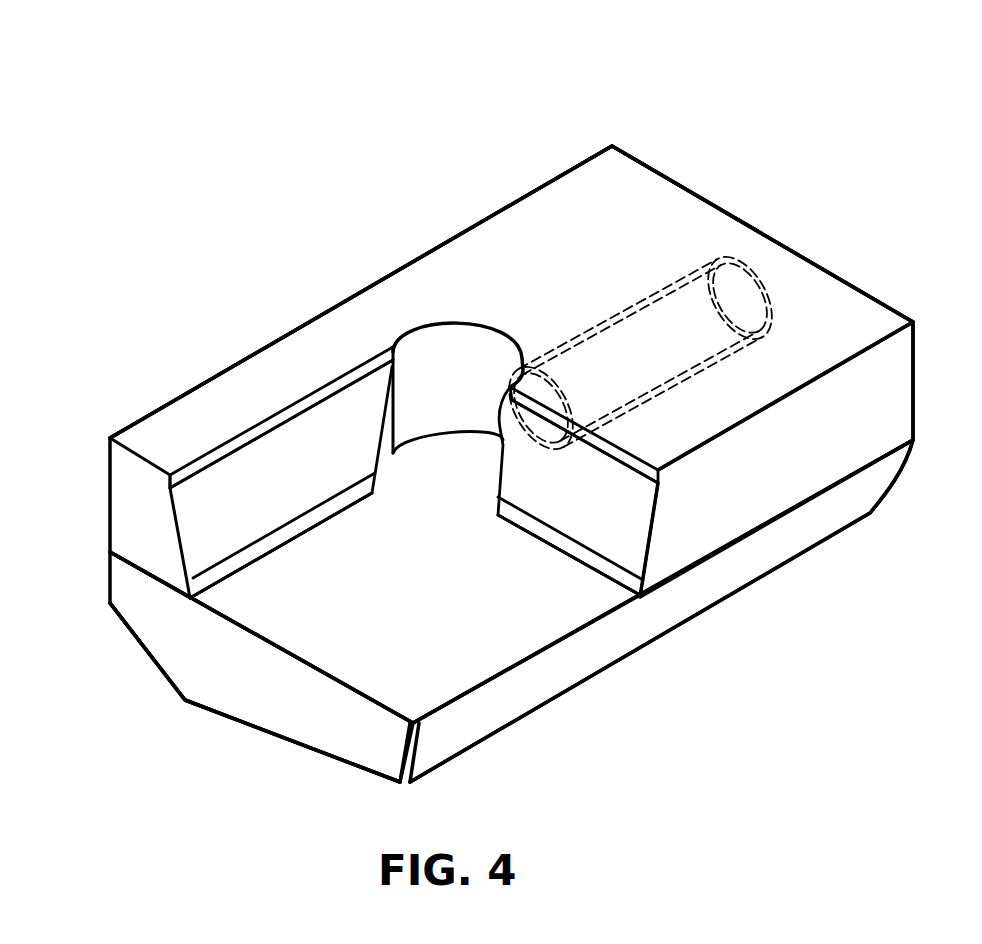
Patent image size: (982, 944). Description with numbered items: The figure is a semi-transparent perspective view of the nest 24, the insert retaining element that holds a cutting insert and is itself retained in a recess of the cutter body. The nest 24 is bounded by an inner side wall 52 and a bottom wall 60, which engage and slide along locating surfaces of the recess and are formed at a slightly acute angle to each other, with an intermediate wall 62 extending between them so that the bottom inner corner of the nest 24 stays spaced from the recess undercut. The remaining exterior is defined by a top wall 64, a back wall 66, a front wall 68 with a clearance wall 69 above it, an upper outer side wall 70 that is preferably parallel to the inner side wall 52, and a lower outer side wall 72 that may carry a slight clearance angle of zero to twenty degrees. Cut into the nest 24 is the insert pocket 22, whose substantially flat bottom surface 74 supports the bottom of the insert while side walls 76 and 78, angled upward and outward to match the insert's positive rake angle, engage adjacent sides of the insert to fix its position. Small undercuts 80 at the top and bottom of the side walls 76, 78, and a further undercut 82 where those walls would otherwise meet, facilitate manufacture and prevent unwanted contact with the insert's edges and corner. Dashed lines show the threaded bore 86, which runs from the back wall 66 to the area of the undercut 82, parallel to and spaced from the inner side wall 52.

The insert pocket 22 is at (482, 630).
The nest 24 is at (772, 88).
The inner side wall 52 is at (300, 308).
The bottom wall 60 is at (318, 762).
The intermediate wall 62 is at (138, 664).
The top wall 64 is at (527, 230).
The back wall 66 is at (852, 276).
The front wall 68 is at (225, 698).
The clearance wall 69 is at (125, 492).
The upper outer side wall 70 is at (893, 382).
The lower outer side wall 72 is at (813, 532).
The bottom surface 74 is at (375, 637).
The pocket side wall 76 is at (200, 503).
The pocket side wall 78 is at (628, 527).
The undercuts 80 is at (258, 432).
The undercut 82 is at (470, 350).
The threaded bore 86 is at (742, 285).